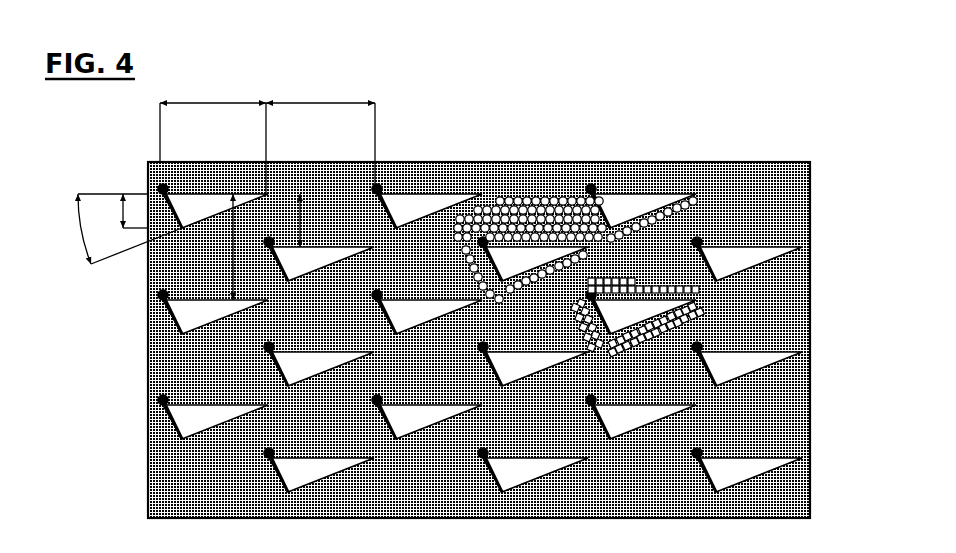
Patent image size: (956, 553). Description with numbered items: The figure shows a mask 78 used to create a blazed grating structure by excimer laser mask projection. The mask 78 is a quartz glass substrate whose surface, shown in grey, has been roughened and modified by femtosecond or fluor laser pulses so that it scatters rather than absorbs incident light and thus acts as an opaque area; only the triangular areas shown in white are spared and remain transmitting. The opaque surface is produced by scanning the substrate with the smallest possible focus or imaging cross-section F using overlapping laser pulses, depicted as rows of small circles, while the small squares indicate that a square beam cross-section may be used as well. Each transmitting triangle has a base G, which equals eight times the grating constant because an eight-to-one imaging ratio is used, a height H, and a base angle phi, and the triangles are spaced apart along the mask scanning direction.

The mask 78 is at (792, 138).
The focus or imaging cross-section F is at (592, 185).
The base of the transmitting triangle G is at (267, 191).
The height of the transmitting triangle H is at (113, 211).